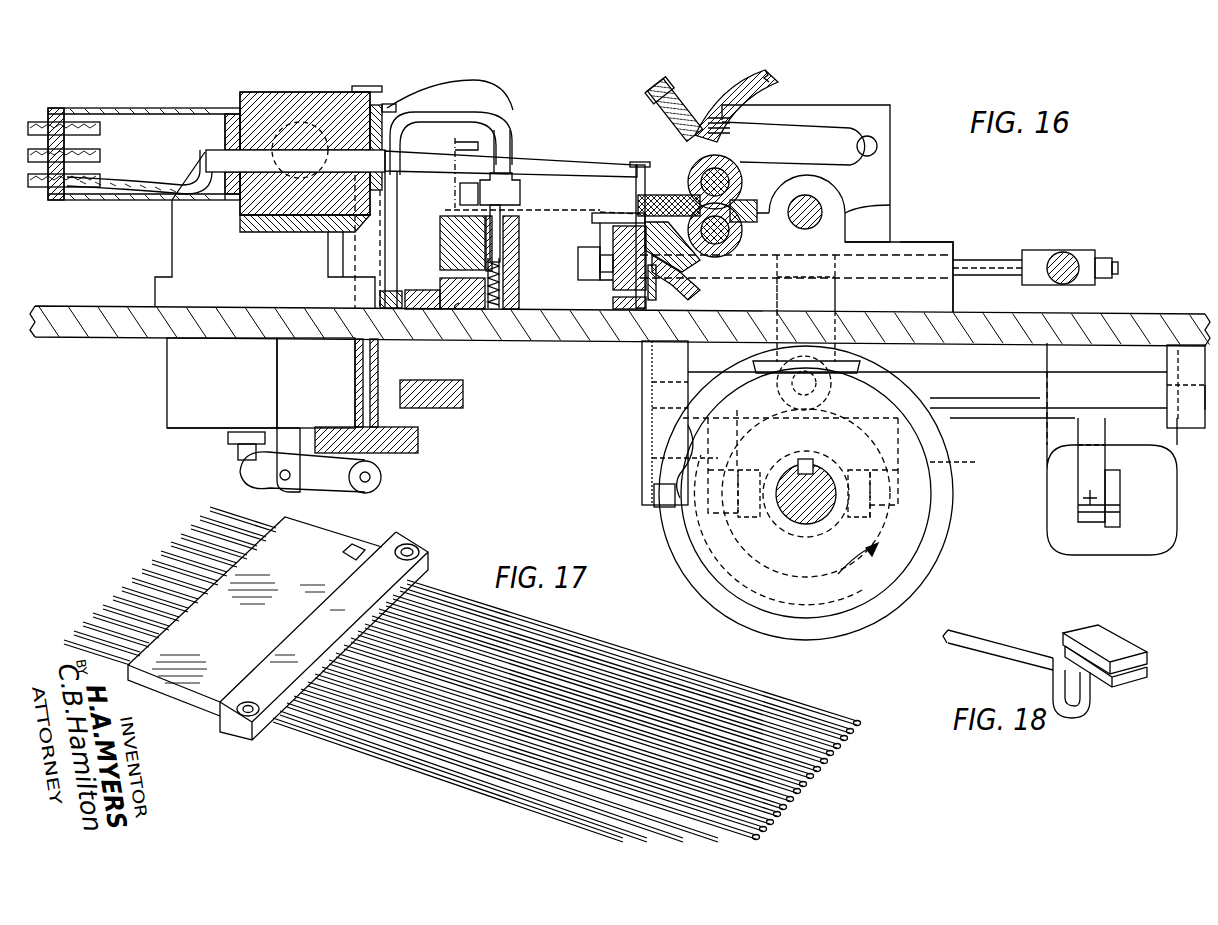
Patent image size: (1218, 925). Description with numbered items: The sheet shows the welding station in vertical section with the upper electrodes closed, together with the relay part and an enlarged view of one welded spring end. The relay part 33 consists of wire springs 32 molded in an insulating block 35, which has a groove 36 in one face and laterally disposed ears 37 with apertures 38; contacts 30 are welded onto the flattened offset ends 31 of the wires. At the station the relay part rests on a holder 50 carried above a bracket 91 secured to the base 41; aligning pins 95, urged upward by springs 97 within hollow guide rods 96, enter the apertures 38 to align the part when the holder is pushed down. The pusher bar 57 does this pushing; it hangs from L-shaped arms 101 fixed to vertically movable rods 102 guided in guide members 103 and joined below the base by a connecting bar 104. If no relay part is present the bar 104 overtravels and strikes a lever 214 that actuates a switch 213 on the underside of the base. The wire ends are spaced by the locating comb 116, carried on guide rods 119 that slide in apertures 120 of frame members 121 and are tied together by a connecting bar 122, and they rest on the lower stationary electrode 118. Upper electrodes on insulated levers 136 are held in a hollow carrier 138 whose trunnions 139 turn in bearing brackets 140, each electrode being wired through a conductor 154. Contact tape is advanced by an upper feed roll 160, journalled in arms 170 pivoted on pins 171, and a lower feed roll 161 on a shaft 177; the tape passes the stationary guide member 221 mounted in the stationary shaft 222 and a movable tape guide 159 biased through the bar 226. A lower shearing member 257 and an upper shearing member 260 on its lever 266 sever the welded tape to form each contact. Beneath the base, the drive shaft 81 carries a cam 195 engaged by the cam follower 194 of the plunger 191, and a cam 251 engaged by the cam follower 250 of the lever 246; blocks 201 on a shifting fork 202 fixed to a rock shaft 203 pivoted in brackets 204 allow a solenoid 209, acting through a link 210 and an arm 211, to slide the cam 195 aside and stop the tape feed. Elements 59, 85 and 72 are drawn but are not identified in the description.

In FIG. 16, the base 41 is at (1121, 323).
In FIG. 16, the bearing brackets 140 is at (178, 232).
In FIG. 16, the conductors 154 is at (143, 180).
In FIG. 16, the trunnions 139 is at (287, 100).
In FIG. 16, the carrier 138 is at (240, 228).
In FIG. 16, the L-shaped arms 101 is at (480, 100).
In FIG. 16, the guide members 103 is at (392, 256).
In FIG. 16, the levers 136 is at (535, 165).
In FIG. 16, the guide bracket 59 is at (455, 142).
In FIG. 16, the stop 85 is at (460, 189).
In FIG. 16, the pusher bar 57 is at (523, 197).
In FIG. 16, the relay part 33 is at (466, 209).
In FIG. 17, the relay part 33 is at (340, 744).
In FIG. 16, the wire springs 32 is at (580, 217).
In FIG. 17, the wire springs 32 is at (118, 580).
In FIG. 18, the wire springs 32 is at (993, 648).
In FIG. 16, the relay part holder 50 is at (440, 262).
In FIG. 16, the aligning pins 95 is at (500, 224).
In FIG. 16, the hollow guide rods 96 is at (519, 246).
In FIG. 16, the springs 97 is at (505, 285).
In FIG. 16, the bracket 91 is at (459, 320).
In FIG. 16, the locating comb 116 is at (592, 220).
In FIG. 16, the lower stationary electrode 118 is at (612, 290).
In FIG. 16, the lower shearing member 257 is at (613, 243).
In FIG. 16, the movable tape guide 159 is at (682, 248).
In FIG. 16, the lower feed roll 161 is at (700, 283).
In FIG. 16, the bar 226 is at (684, 196).
In FIG. 16, the upper feed roll 160 is at (708, 162).
In FIG. 16, the stationary tape guide member 221 is at (735, 238).
In FIG. 16, the shaft 177 is at (748, 256).
In FIG. 16, the lever 266 is at (712, 72).
In FIG. 16, the upper shearing member 260 is at (664, 124).
In FIG. 16, the arms 170 is at (800, 128).
In FIG. 16, the pins 171 is at (880, 146).
In FIG. 16, the stationary shaft 222 is at (880, 206).
In FIG. 16, the frame member 120 is at (905, 248).
In FIG. 16, the frame members 121 is at (955, 242).
In FIG. 16, the plunger 191 is at (838, 292).
In FIG. 16, the guide rods 119 is at (990, 264).
In FIG. 16, the connecting bar 122 is at (1065, 250).
In FIG. 16, the switch 213 is at (167, 396).
In FIG. 16, the lever 214 is at (338, 480).
In FIG. 16, the rods 102 is at (355, 382).
In FIG. 16, the bar 72 is at (463, 389).
In FIG. 16, the connecting bar 104 is at (418, 440).
In FIG. 16, the brackets 204 is at (655, 358).
In FIG. 16, the lever 246 is at (640, 404).
In FIG. 16, the shifting fork 202 is at (650, 458).
In FIG. 16, the cam follower 250 is at (655, 505).
In FIG. 16, the cam 251 is at (675, 552).
In FIG. 16, the cam 195 is at (925, 433).
In FIG. 16, the cam follower 194 is at (862, 356).
In FIG. 16, the drive shaft 81 is at (806, 524).
In FIG. 16, the blocks 201 is at (745, 558).
In FIG. 16, the rock shaft 203 is at (1030, 415).
In FIG. 16, the solenoid 209 is at (1068, 548).
In FIG. 16, the arm 211 is at (1080, 485).
In FIG. 16, the link 210 is at (1122, 498).
In FIG. 17, the block 35 is at (190, 690).
In FIG. 17, the groove 36 is at (356, 548).
In FIG. 17, the ears 37 is at (414, 546).
In FIG. 17, the apertures 38 is at (420, 548).
In FIG. 17, the contacts 30 is at (858, 720).
In FIG. 18, the contacts 30 is at (1112, 636).
In FIG. 17, the flattened offset ends 31 is at (858, 728).
In FIG. 18, the flattened offset ends 31 is at (1125, 680).